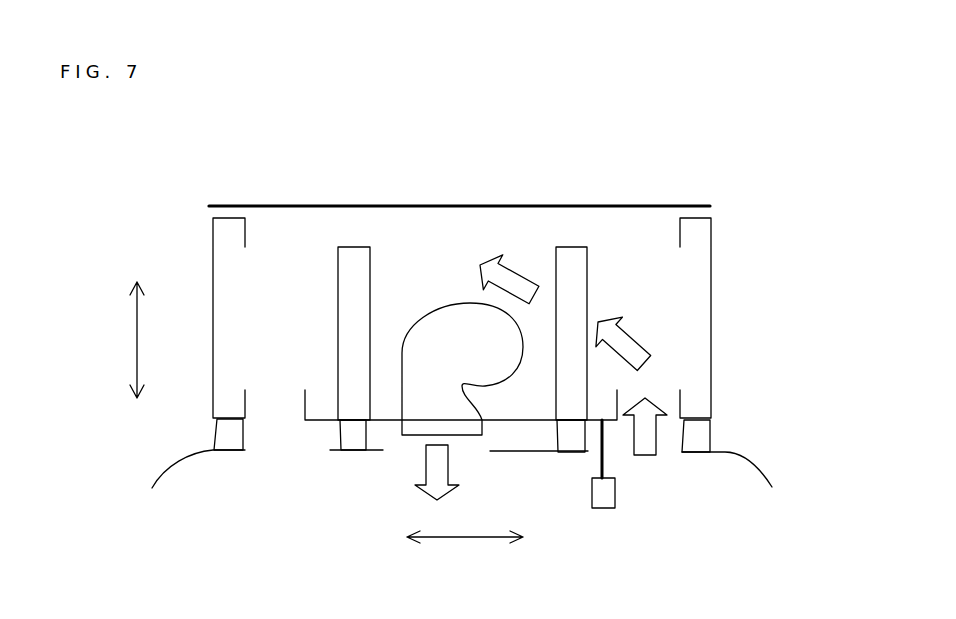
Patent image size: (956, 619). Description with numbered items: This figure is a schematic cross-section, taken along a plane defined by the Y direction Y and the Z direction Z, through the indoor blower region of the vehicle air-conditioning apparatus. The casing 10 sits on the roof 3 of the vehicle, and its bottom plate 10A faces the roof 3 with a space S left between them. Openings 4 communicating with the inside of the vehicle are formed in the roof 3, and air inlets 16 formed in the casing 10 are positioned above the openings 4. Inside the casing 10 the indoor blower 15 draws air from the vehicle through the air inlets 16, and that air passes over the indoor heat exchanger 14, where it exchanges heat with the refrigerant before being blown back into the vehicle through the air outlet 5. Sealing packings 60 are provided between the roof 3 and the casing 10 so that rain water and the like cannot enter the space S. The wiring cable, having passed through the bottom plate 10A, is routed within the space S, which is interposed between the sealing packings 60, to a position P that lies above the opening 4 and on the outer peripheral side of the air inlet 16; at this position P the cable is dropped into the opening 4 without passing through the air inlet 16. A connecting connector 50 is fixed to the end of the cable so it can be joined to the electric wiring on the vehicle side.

The casing 10 is at (252, 205).
The bottom plate 10A is at (693, 418).
The indoor heat exchanger 14 is at (445, 330).
The indoor blower 15 is at (350, 258).
The air inlet 16 is at (245, 400).
The roof 3 is at (735, 449).
The opening 4 is at (245, 452).
The air outlet 5 is at (490, 452).
The connecting connector 50 is at (601, 500).
The sealing packing 60 is at (233, 440).
The position P is at (603, 418).
The space S is at (527, 433).
The Y direction Y is at (462, 540).
The Z direction Z is at (135, 343).